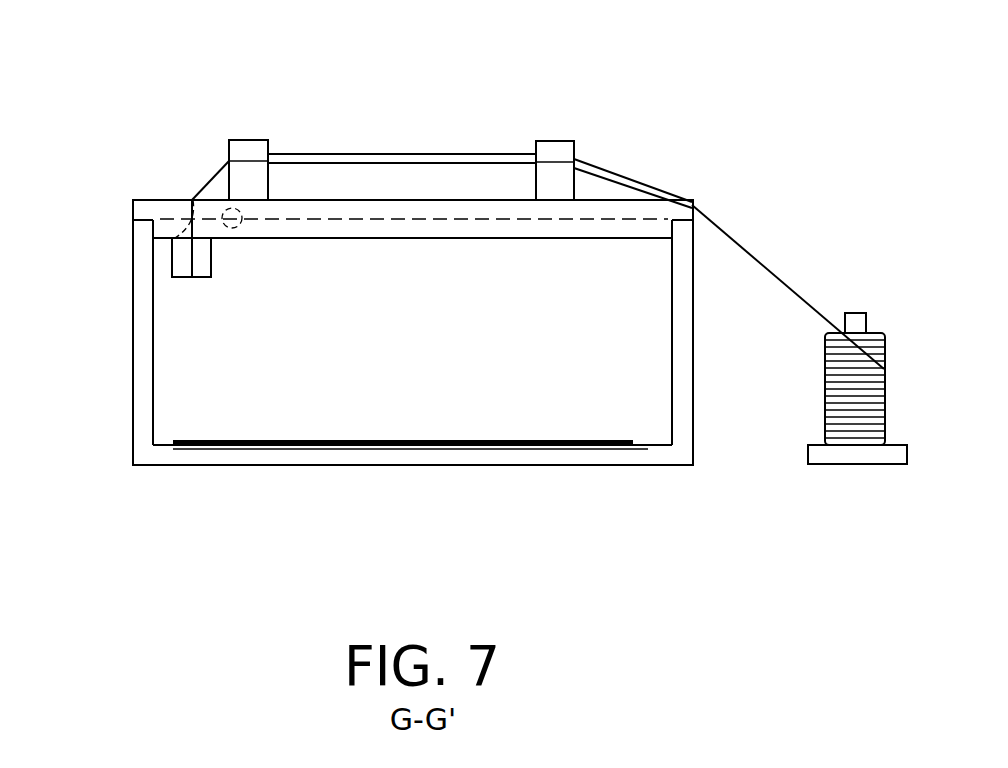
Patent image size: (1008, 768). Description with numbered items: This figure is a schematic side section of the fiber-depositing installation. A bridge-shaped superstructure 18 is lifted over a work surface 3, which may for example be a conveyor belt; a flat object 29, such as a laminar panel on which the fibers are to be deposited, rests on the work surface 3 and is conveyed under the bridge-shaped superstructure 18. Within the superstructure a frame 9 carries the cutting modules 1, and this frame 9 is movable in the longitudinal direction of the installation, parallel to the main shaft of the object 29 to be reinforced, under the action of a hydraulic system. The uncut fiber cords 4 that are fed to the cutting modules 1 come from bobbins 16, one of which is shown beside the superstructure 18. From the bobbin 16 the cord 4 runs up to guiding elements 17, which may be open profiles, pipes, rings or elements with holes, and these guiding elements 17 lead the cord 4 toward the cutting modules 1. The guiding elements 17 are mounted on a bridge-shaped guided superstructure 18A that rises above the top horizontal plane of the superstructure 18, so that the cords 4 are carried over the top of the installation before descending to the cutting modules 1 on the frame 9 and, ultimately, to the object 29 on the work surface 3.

The cutting module 1 is at (170, 257).
The work surface 3 is at (630, 458).
The uncut fiber cord 4 is at (210, 177).
The frame 9 is at (192, 258).
The bobbin 16 is at (857, 368).
The guiding element 17 is at (403, 163).
The bridge-shaped superstructure 18 is at (132, 422).
The bridge-shaped guided superstructure 18A is at (245, 173).
The flat object 29 is at (293, 442).